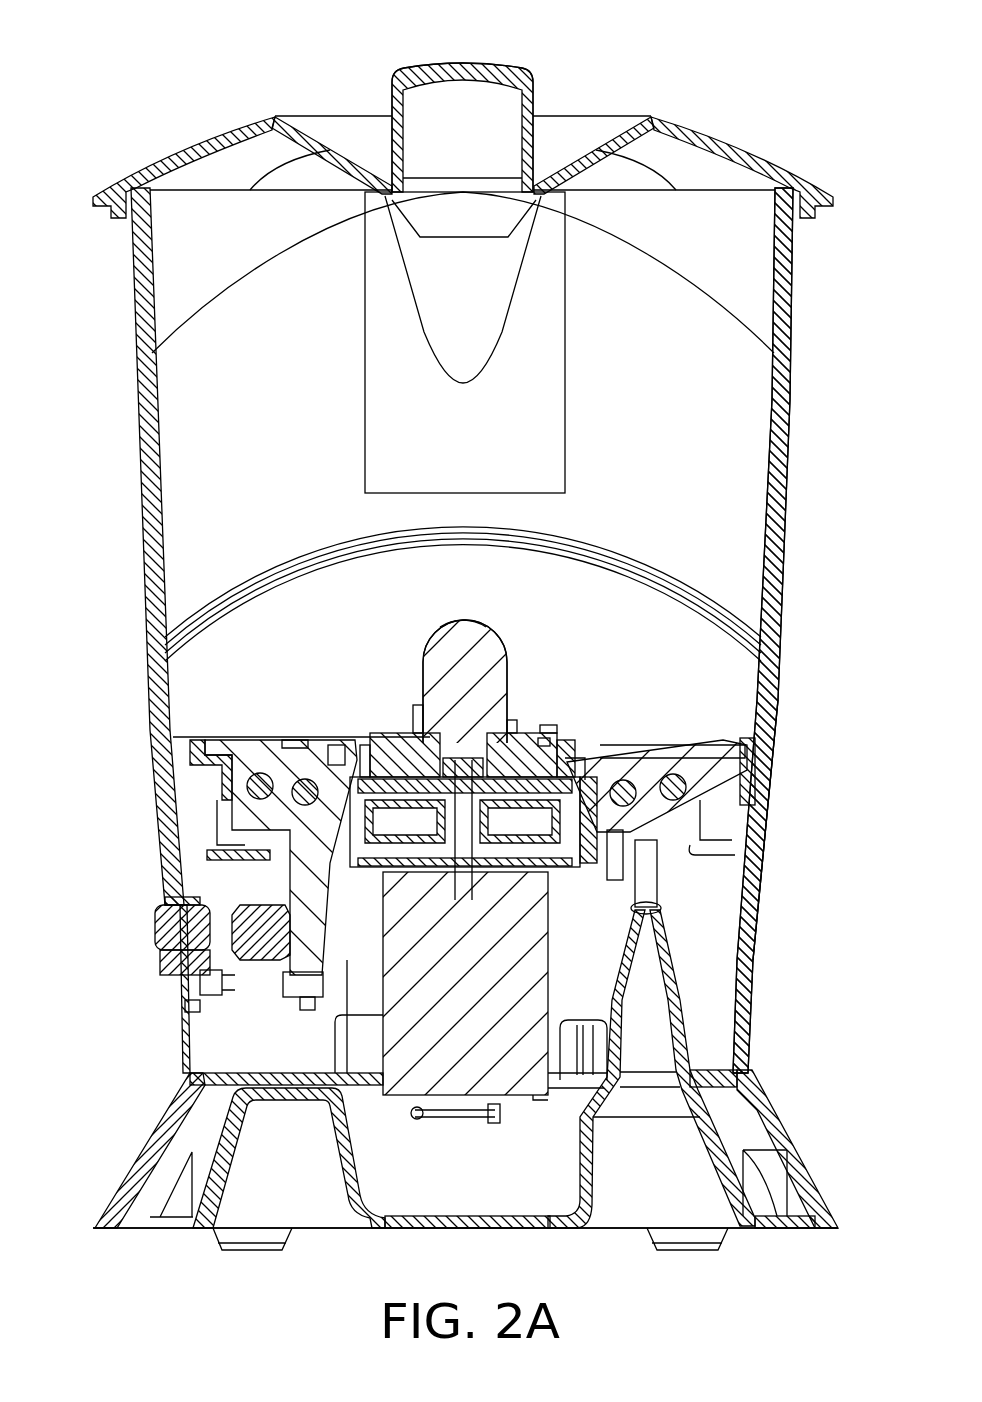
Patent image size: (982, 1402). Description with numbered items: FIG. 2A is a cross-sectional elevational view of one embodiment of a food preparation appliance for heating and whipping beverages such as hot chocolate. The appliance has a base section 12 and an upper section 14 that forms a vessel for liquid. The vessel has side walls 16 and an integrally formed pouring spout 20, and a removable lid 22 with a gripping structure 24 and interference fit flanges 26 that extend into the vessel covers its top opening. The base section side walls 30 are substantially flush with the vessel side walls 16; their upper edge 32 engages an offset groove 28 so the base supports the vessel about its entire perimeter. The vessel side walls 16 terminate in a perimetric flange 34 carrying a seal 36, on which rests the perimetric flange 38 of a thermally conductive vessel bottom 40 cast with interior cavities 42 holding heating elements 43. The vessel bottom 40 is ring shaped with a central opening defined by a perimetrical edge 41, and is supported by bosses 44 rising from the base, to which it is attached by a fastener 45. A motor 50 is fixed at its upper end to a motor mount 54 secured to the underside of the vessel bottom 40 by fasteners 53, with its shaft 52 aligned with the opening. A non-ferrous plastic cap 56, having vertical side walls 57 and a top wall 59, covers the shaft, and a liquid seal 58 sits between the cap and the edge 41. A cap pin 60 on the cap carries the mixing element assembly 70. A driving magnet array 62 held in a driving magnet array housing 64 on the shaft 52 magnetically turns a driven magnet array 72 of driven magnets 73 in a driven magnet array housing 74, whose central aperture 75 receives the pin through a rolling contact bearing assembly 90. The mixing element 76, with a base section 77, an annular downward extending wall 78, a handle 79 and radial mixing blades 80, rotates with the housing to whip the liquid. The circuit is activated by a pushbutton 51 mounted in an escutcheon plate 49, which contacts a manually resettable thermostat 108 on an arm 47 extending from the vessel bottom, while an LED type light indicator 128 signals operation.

The base section 12 is at (765, 907).
The upper section 14 is at (792, 517).
The side walls 16 is at (787, 458).
The pouring spout 20 is at (450, 291).
The removable lid 22 is at (397, 68).
The handle or gripping structure 24 is at (536, 104).
The interference fit flanges 26 is at (153, 242).
The offset groove 28 is at (765, 660).
The base section side walls 30 is at (757, 966).
The upper edge 32 is at (780, 690).
The perimetric flange 34 is at (212, 745).
The seal 36 is at (150, 738).
The perimetric flange 38 is at (180, 742).
The vessel bottom 40 is at (295, 745).
The perimetrical edge 41 is at (330, 750).
The interior cavities 42 is at (228, 800).
The heating elements 43 is at (258, 773).
The bosses 44 is at (336, 1045).
The fastener 45 is at (658, 907).
The arm 47 is at (333, 1000).
The escutcheon plate 49 is at (170, 907).
The motor 50 is at (441, 1023).
The pushbutton 51 is at (155, 950).
The shaft 52 is at (425, 850).
The fasteners 53 is at (612, 905).
The motor mount 54 is at (607, 860).
The cap 56 is at (620, 760).
The side walls 57 is at (600, 748).
The liquid seal 58 is at (265, 910).
The top wall 59 is at (373, 733).
The cap pin 60 is at (513, 740).
The driving magnet array 62 is at (463, 880).
The driving magnet array housing 64 is at (427, 866).
The mixing element assembly 70 is at (478, 618).
The driven magnet array 72 is at (547, 737).
The driven magnets 73 is at (415, 733).
The driven magnet array housing 74 is at (560, 745).
The central aperture 75 is at (437, 640).
The mixing element 76 is at (510, 655).
The base section 77 is at (503, 737).
The annular downward extending wall 78 is at (570, 762).
The handle 79 is at (462, 620).
The radial mixing blades 80 is at (365, 745).
The rolling contact bearing assembly 90 is at (481, 866).
The manually resettable thermostat 108 is at (212, 984).
The LED type light indicator 128 is at (183, 995).